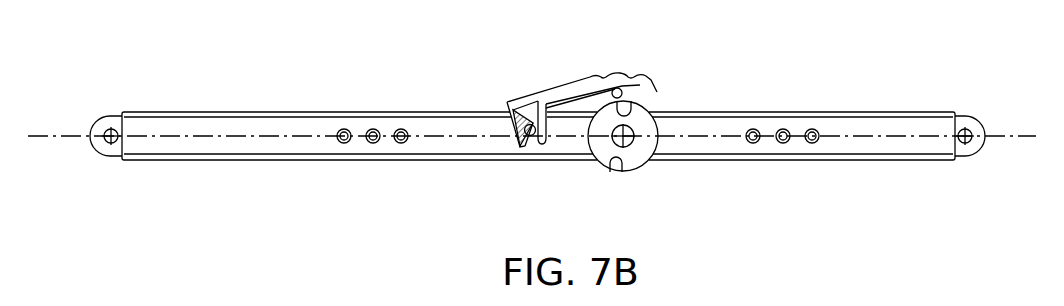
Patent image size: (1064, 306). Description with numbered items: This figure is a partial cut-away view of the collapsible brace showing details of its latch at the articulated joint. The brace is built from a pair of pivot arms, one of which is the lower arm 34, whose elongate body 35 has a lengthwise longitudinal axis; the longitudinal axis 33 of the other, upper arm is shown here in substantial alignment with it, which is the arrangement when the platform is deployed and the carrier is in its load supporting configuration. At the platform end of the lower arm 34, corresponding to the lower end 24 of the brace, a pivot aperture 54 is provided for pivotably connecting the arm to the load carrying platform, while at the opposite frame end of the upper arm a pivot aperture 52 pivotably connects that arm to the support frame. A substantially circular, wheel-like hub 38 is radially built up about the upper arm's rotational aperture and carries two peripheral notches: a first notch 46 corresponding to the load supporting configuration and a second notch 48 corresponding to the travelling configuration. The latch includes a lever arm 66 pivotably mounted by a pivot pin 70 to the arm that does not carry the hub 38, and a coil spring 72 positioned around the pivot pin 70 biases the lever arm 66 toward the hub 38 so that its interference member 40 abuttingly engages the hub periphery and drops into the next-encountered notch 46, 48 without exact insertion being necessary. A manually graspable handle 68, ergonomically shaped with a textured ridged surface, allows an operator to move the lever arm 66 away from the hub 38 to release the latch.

The lower end 24 is at (101, 140).
The longitudinal axis 33 is at (1002, 122).
The lower arm 34 is at (538, 109).
The elongate body 35 is at (147, 128).
The hub 38 is at (657, 139).
The interference member 40 is at (642, 76).
The first notch 46 is at (636, 111).
The second notch 48 is at (617, 163).
The pivot aperture 52 is at (967, 127).
The pivot aperture 54 is at (107, 130).
The lever arm 66 is at (535, 113).
The manually graspable handle 68 is at (618, 79).
The pivot pin 70 is at (517, 128).
The coil spring 72 is at (532, 138).